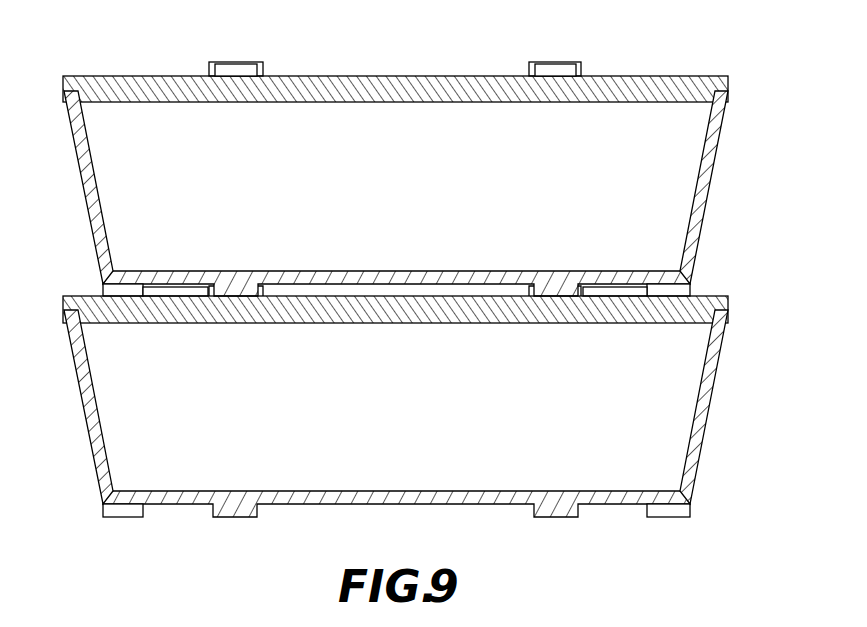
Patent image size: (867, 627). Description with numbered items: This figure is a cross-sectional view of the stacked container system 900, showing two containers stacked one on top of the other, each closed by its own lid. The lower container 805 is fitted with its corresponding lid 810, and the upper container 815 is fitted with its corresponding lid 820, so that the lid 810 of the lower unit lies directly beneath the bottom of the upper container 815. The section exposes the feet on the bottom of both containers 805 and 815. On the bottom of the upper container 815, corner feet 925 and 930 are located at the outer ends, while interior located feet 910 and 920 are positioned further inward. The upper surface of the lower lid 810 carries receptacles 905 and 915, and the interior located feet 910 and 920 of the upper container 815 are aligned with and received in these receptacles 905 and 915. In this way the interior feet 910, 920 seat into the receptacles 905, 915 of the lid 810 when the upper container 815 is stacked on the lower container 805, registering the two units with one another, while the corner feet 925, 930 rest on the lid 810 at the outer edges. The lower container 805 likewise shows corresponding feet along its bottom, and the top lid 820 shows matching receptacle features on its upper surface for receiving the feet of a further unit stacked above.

The stacked container assembly 900 is at (63, 41).
The lid 820 is at (136, 76).
The container 815 is at (82, 176).
The lid 810 is at (63, 302).
The container 805 is at (84, 412).
The corner foot 930 is at (112, 291).
The corner foot 925 is at (683, 290).
The receptacle 905 is at (266, 289).
The interior located foot 910 is at (240, 290).
The receptacle 915 is at (529, 289).
The interior located foot 920 is at (552, 290).